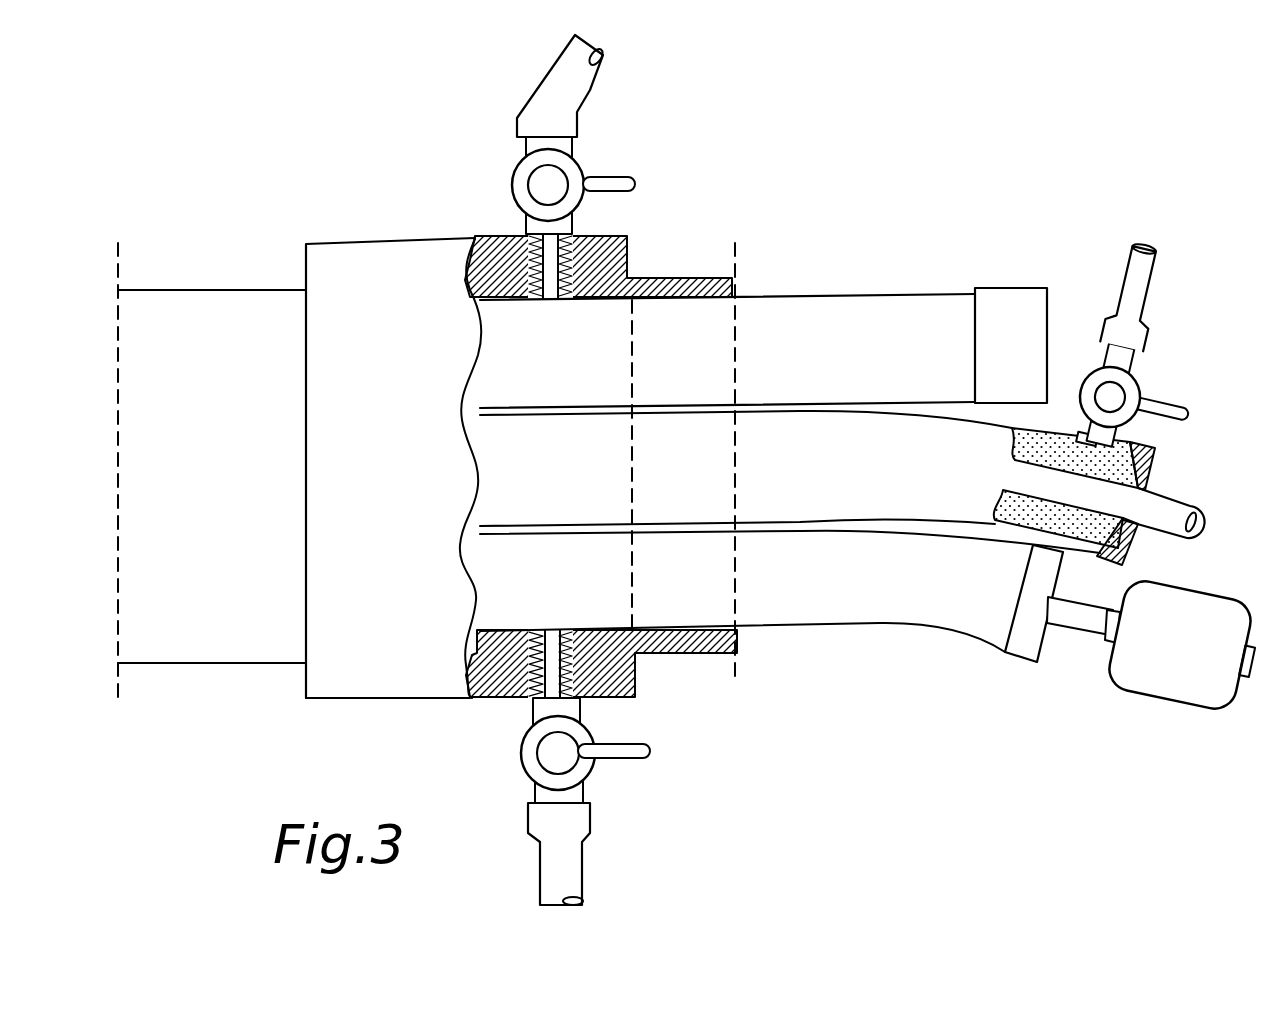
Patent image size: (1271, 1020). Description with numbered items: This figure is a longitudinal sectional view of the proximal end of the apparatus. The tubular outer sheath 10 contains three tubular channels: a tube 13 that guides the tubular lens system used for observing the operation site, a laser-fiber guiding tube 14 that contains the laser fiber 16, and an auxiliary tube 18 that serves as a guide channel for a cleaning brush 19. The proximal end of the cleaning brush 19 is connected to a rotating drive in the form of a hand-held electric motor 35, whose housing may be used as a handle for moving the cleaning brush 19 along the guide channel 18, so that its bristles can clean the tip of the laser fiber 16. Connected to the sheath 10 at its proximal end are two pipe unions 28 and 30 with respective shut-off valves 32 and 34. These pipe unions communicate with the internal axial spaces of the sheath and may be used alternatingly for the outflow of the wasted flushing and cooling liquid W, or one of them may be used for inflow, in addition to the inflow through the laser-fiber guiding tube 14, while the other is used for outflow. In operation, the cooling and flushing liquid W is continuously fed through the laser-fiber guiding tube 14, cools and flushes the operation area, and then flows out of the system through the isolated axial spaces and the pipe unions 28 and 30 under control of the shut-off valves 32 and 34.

The tubular outer sheath 10 is at (200, 290).
The tube 13 is at (803, 296).
The laser-fiber guiding tube 14 is at (918, 412).
The laser fiber 16 is at (1178, 502).
The auxiliary tube 18 is at (918, 630).
The cleaning brush 19 is at (1077, 630).
The pipe union 28 is at (520, 768).
The pipe union 30 is at (514, 186).
The shut-off valve 32 is at (655, 750).
The shut-off valve 34 is at (635, 183).
The hand-held electric motor 35 is at (1180, 707).
The cooling and flushing liquid W is at (1050, 453).